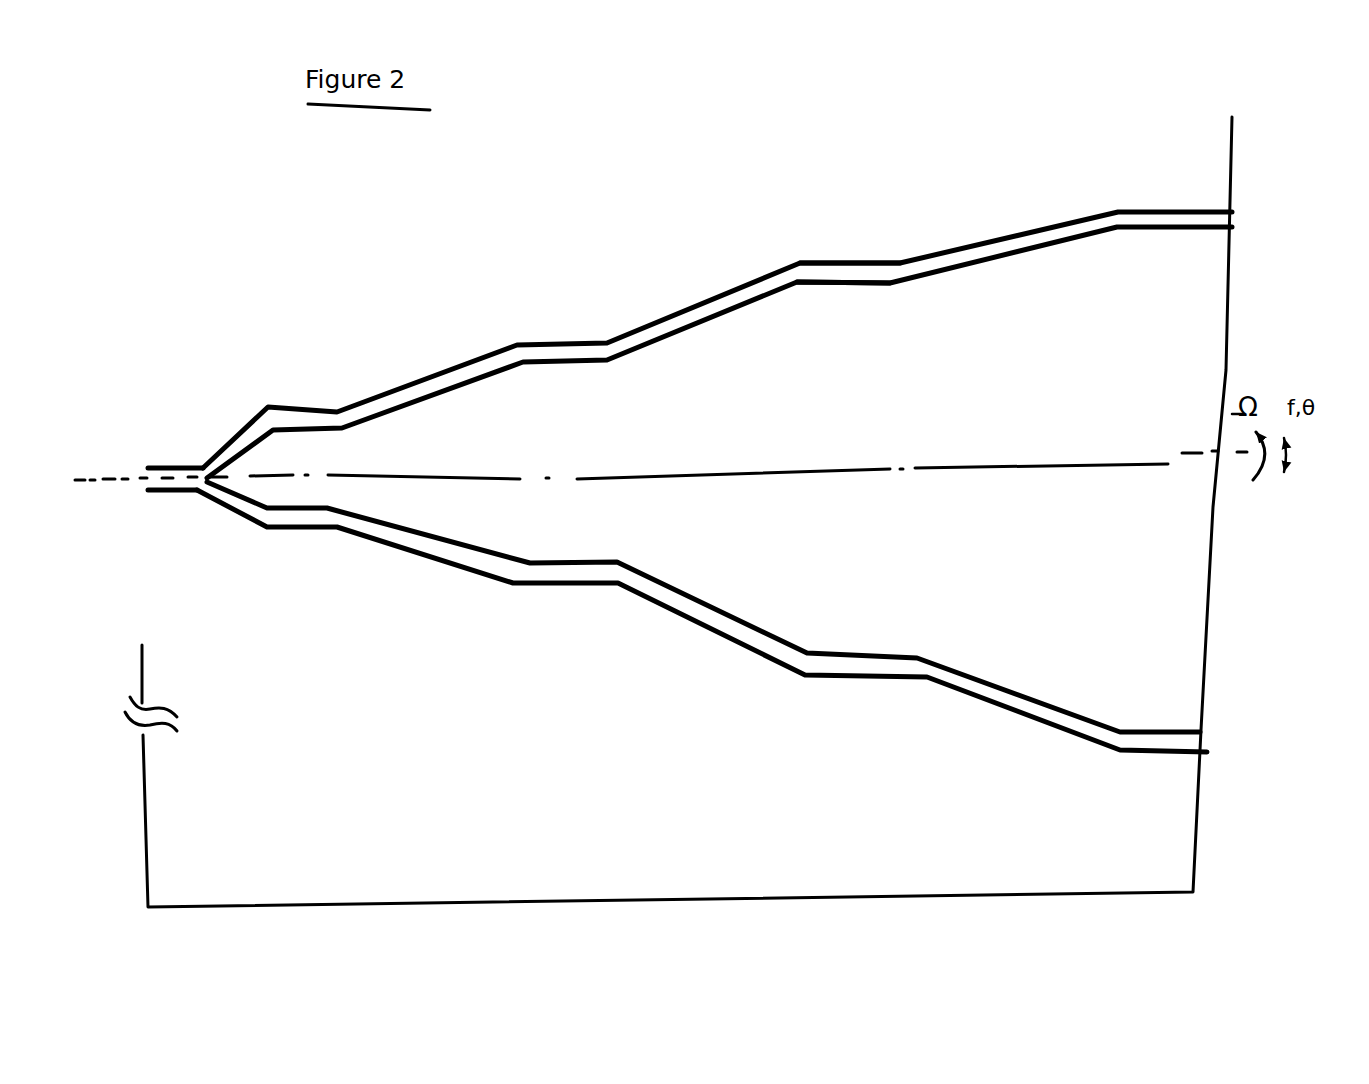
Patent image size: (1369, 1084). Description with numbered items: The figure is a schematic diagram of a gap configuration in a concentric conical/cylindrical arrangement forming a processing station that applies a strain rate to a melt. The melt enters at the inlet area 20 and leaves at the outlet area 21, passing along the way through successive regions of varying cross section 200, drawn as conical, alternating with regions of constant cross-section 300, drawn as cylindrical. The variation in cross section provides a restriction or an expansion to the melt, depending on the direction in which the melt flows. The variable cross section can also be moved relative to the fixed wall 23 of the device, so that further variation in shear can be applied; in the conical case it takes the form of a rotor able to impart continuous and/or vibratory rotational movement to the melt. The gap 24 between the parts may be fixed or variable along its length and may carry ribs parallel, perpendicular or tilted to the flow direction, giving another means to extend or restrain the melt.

The inlet area 20 is at (198, 483).
The outlet area 21 is at (1249, 222).
The fixed wall 23 is at (757, 662).
The gap 24 is at (1000, 733).
The regions of varying cross section 200 is at (701, 315).
The regions of constant cross-section 300 is at (842, 270).